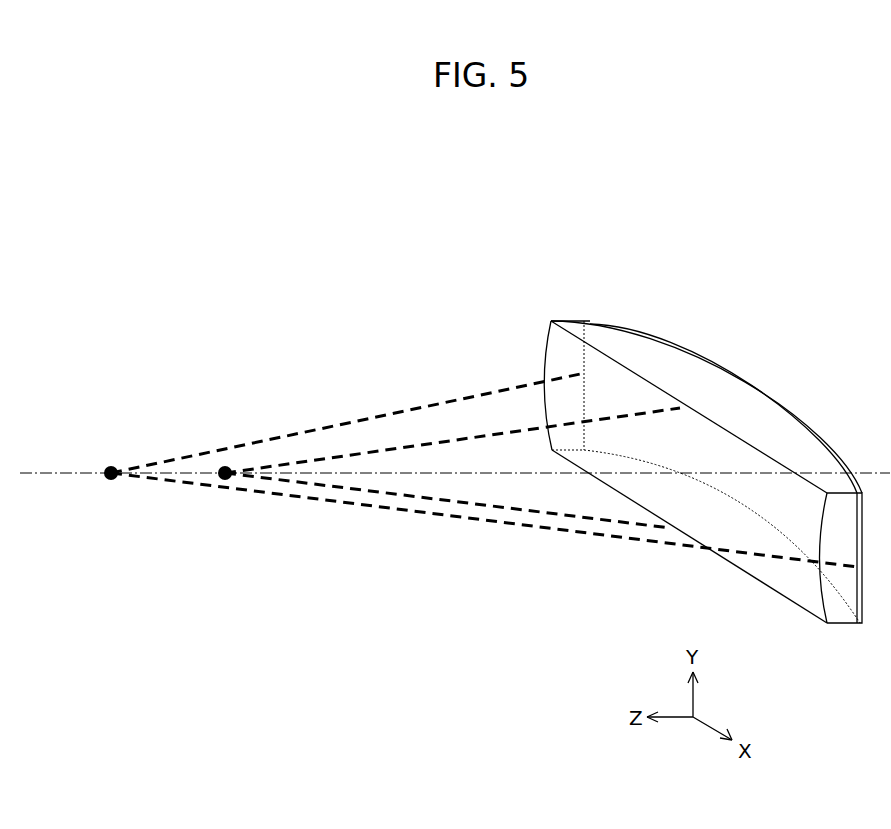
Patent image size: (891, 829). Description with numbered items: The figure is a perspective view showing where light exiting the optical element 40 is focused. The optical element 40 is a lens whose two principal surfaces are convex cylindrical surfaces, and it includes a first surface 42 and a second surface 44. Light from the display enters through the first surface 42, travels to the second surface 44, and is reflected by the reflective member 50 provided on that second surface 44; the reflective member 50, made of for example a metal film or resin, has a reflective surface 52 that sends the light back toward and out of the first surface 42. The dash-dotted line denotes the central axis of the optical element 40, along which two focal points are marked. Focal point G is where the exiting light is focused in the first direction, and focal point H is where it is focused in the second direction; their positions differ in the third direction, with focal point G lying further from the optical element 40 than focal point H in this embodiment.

The optical element 40 is at (684, 488).
The first surface 42 is at (800, 585).
The second surface 44 is at (777, 396).
The reflective member 50 is at (809, 418).
The reflective surface 52 is at (815, 438).
The focal point G is at (111, 481).
The focal point H is at (225, 481).